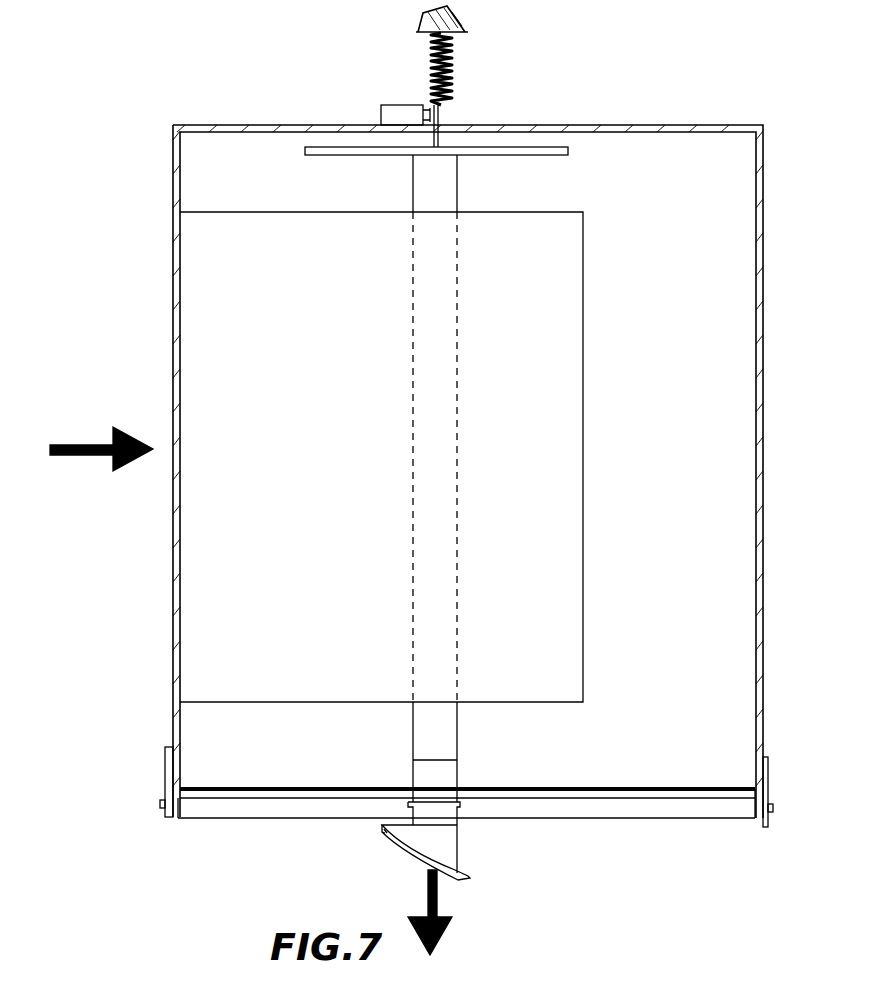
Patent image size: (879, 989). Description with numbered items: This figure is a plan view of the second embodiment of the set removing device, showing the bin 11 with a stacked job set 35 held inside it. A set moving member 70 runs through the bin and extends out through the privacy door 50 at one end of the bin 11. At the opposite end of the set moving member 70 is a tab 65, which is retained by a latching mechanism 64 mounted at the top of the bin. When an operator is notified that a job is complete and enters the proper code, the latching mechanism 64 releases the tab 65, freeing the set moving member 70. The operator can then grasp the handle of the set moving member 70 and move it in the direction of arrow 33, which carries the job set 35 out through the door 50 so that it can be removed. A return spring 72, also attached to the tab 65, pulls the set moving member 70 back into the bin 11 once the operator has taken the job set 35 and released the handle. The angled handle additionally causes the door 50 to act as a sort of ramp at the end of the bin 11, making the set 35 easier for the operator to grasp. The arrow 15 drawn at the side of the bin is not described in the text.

The bin 11 is at (725, 128).
The inlet flow arrow 15 is at (78, 445).
The arrow 33 is at (445, 933).
The job set 35 is at (575, 432).
The privacy door 50 is at (707, 808).
The latching mechanism 64 is at (400, 115).
The tab 65 is at (445, 140).
The set moving member 70 is at (447, 843).
The return spring 72 is at (455, 77).